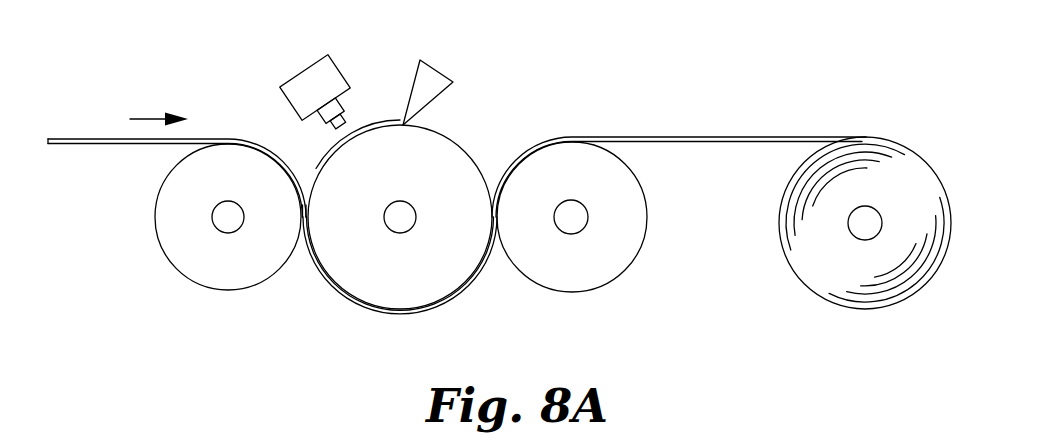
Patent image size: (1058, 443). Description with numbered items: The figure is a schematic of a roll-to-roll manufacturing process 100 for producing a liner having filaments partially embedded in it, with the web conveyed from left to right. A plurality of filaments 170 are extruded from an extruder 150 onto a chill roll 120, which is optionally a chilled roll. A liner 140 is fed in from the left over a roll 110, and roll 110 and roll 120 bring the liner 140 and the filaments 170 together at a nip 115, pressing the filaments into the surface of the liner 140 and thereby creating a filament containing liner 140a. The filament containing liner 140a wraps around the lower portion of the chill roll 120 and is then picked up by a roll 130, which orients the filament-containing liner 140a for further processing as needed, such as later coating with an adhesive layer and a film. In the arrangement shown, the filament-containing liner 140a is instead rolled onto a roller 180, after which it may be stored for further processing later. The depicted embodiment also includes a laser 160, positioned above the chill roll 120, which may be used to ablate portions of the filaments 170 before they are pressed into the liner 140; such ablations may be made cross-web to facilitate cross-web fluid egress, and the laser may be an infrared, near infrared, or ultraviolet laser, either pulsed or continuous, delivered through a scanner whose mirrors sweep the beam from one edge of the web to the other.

The manufacturing process 100 is at (586, 53).
The roll 110 is at (207, 273).
The nip 115 is at (305, 229).
The chill roll 120 is at (378, 273).
The roll 130 is at (550, 274).
The liner 140 is at (95, 135).
The filament containing liner 140a is at (398, 316).
The extruder 150 is at (435, 78).
The laser 160 is at (303, 77).
The filaments 170 is at (380, 120).
The roller 180 is at (867, 141).